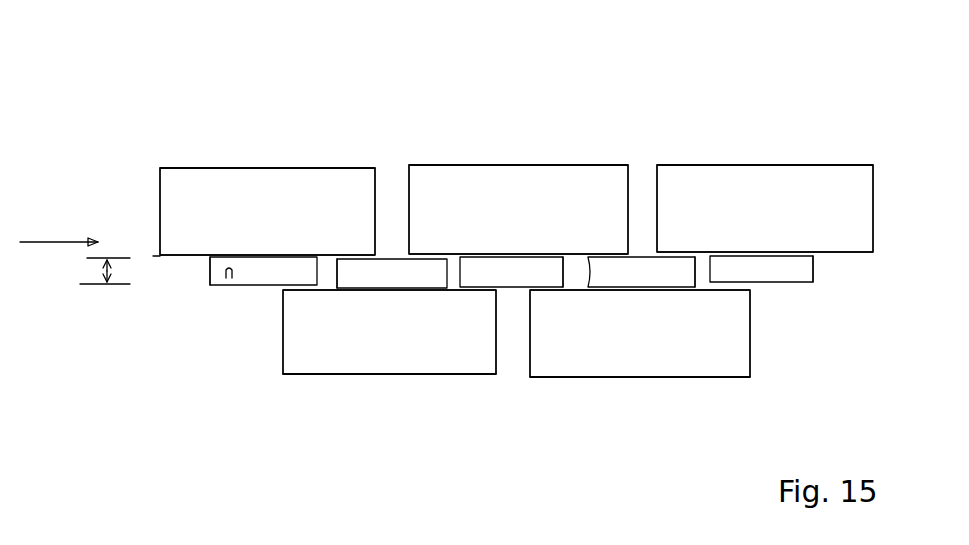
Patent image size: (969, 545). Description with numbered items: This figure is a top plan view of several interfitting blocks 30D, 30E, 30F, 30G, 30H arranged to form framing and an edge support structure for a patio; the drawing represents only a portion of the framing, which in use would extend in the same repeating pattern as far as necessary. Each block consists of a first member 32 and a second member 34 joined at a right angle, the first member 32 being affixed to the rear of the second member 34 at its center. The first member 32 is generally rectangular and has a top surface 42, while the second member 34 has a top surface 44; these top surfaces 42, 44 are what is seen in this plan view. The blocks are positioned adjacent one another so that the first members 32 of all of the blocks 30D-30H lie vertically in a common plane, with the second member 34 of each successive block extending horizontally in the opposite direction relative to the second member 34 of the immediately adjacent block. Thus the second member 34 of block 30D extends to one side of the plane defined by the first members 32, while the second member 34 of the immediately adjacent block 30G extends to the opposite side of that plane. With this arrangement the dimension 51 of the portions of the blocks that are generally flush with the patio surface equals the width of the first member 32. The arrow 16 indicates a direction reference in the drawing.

The flow direction 16 is at (59, 228).
The interfitting block 30D is at (286, 136).
The interfitting block 30E is at (490, 120).
The interfitting block 30F is at (749, 138).
The interfitting block 30G is at (362, 392).
The interfitting block 30H is at (650, 397).
The first member 32 is at (357, 272).
The second member 34 is at (172, 166).
The top surface 42 is at (262, 281).
The top surface 44 is at (258, 222).
The dimension 51 is at (112, 270).